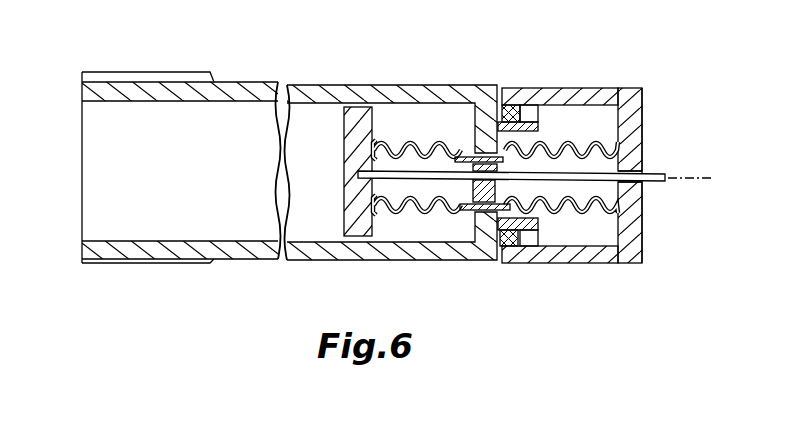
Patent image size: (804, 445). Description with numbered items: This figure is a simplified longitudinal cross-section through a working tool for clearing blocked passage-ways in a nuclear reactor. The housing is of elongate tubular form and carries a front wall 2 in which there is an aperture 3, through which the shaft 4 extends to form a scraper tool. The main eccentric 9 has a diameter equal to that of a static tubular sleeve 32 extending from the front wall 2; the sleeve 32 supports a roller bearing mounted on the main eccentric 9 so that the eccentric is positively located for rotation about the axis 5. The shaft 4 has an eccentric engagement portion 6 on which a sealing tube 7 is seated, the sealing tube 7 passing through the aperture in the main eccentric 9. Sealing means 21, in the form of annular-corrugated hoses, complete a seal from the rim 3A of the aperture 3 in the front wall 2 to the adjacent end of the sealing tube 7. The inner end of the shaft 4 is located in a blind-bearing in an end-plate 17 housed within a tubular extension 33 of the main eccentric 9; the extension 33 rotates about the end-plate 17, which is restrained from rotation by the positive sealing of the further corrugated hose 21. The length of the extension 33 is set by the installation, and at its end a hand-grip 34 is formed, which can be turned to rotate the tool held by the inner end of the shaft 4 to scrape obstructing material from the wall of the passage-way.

The hand-grip 34 is at (168, 73).
The end-plate 17 is at (367, 106).
The tubular extension 33 is at (445, 94).
The tubular sleeve 32 is at (570, 96).
The front wall 2 is at (651, 92).
The rim of the aperture 3A is at (633, 137).
The shaft 4 is at (657, 172).
The aperture 3 is at (632, 190).
The axis 5 is at (686, 183).
The sealing means 21 is at (407, 214).
The sealing tube 7 is at (445, 208).
The main eccentric 9 is at (478, 242).
The engagement portion 6 is at (497, 190).